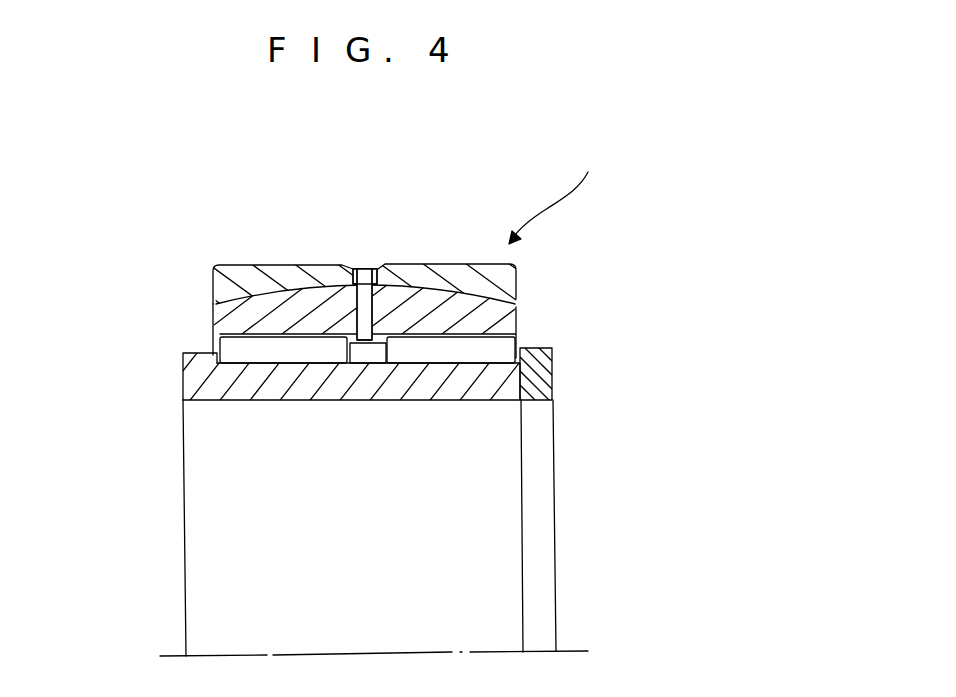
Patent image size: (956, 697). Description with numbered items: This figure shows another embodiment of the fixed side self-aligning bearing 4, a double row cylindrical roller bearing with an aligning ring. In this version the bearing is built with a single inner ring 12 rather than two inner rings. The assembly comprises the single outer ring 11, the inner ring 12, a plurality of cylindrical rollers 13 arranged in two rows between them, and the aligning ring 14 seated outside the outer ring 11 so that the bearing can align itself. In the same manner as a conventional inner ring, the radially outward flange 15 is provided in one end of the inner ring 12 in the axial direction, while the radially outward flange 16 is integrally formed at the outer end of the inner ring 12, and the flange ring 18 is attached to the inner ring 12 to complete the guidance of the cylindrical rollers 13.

The fixed side self-aligning bearing 4 is at (615, 161).
The outer ring 11 is at (423, 303).
The inner ring 12 is at (327, 388).
The cylindrical rollers 13 is at (273, 352).
The aligning ring 14 is at (283, 270).
The radially outward flange 15 is at (387, 337).
The radially outward flange 16 is at (183, 360).
The flange ring 18 is at (552, 372).